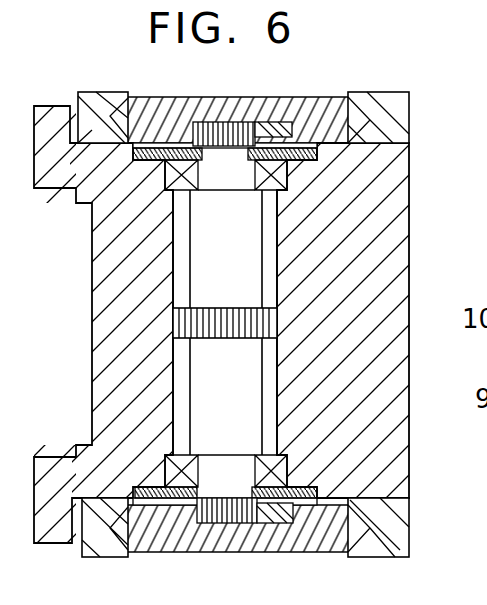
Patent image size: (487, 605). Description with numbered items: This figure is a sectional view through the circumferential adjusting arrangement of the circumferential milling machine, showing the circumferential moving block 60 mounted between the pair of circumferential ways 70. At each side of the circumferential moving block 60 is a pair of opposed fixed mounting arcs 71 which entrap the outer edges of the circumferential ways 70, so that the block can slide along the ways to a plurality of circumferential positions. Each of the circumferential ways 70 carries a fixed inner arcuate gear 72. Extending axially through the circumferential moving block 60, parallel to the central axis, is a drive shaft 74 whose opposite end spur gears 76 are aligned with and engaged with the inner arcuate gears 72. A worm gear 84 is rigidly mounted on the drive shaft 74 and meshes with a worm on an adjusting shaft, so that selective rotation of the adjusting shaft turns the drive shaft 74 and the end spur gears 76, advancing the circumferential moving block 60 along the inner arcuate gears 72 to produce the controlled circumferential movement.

The circumferential moving block 60 is at (97, 226).
The circumferential ways 70 is at (316, 108).
The fixed mounting arcs 71 is at (400, 110).
The fixed inner arcuate gear 72 is at (277, 126).
The drive shaft 74 is at (203, 392).
The opposite end spur gears 76 is at (224, 128).
The worm gear 84 is at (205, 327).